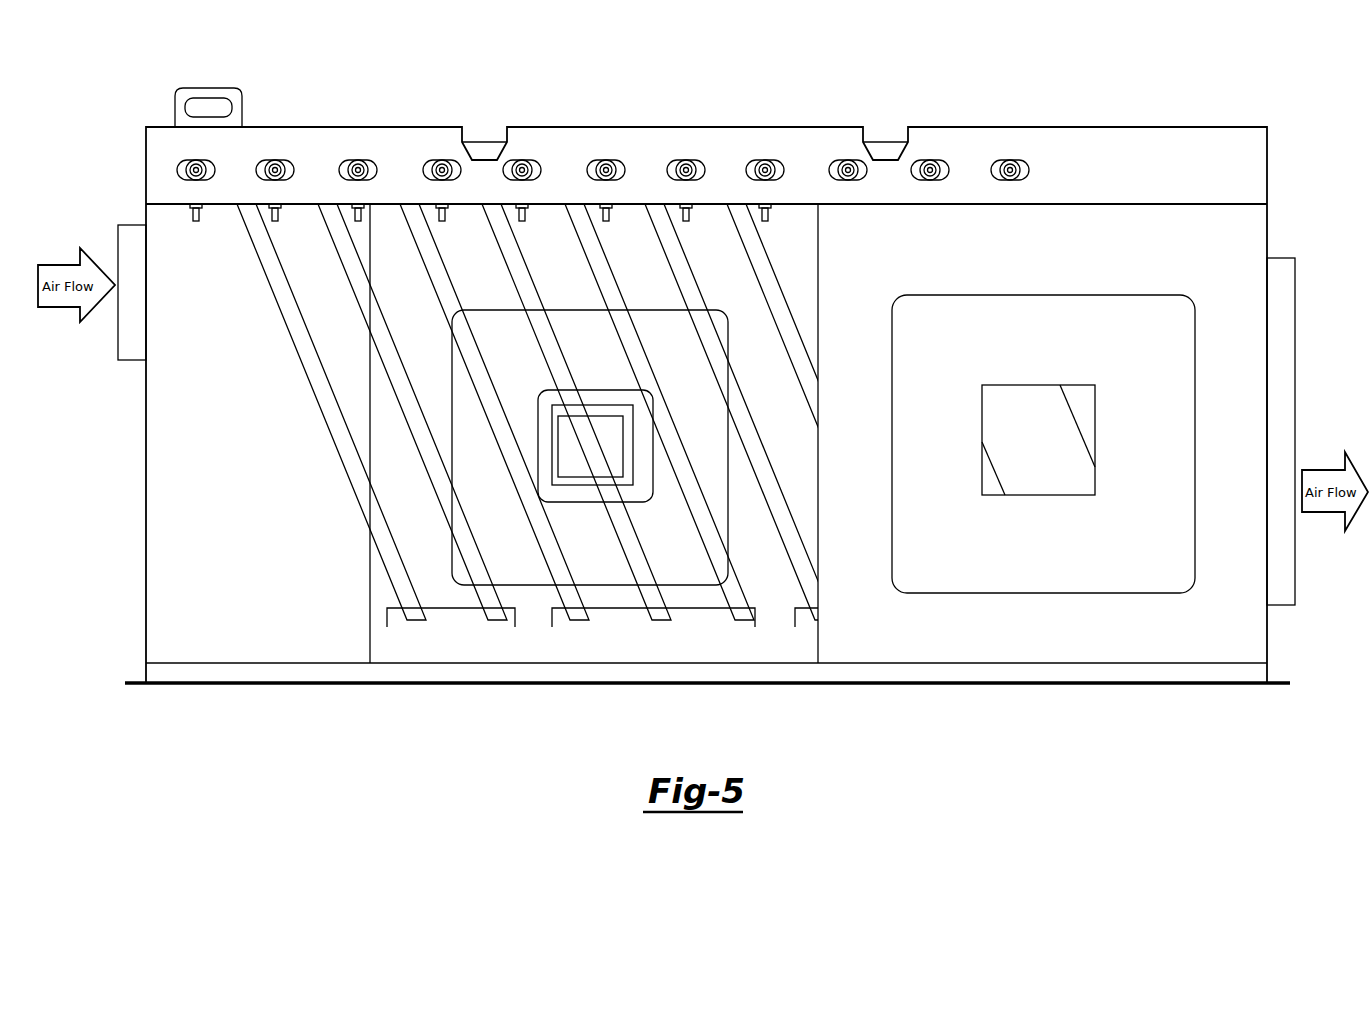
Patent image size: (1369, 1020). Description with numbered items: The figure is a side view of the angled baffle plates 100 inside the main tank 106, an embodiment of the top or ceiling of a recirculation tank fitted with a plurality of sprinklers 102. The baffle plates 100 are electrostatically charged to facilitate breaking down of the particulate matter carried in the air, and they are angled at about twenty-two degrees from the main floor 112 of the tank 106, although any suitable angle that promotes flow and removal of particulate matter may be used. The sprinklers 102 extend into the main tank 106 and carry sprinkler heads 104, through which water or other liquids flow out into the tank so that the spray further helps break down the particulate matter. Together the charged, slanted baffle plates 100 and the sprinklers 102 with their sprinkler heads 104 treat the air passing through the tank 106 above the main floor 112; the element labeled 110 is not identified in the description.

The baffle plates 100 is at (636, 560).
The sprinklers 102 is at (540, 170).
The sprinkler heads 104 is at (613, 217).
The main tank 106 is at (444, 582).
The blower unit 110 is at (1037, 460).
The main floor 112 is at (289, 662).